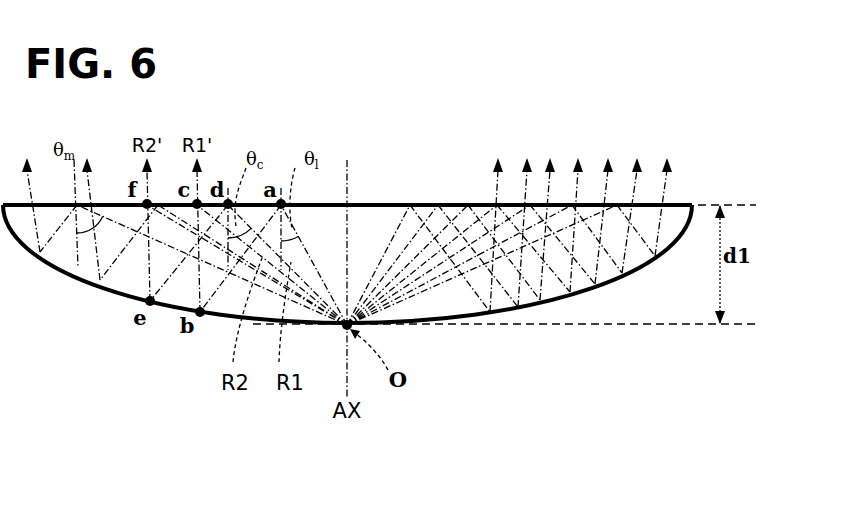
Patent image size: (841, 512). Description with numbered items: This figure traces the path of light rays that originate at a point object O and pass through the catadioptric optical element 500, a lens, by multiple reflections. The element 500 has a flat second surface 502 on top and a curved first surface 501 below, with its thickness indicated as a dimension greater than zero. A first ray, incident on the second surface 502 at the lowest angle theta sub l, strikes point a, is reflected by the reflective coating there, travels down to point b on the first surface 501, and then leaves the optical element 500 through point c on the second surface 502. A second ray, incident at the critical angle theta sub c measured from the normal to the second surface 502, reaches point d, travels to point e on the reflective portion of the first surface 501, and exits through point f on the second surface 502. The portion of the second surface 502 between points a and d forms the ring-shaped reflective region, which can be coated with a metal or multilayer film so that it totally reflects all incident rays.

The catadioptric optical element 500 is at (347, 263).
The first surface 501 is at (470, 317).
The second surface 502 is at (427, 204).